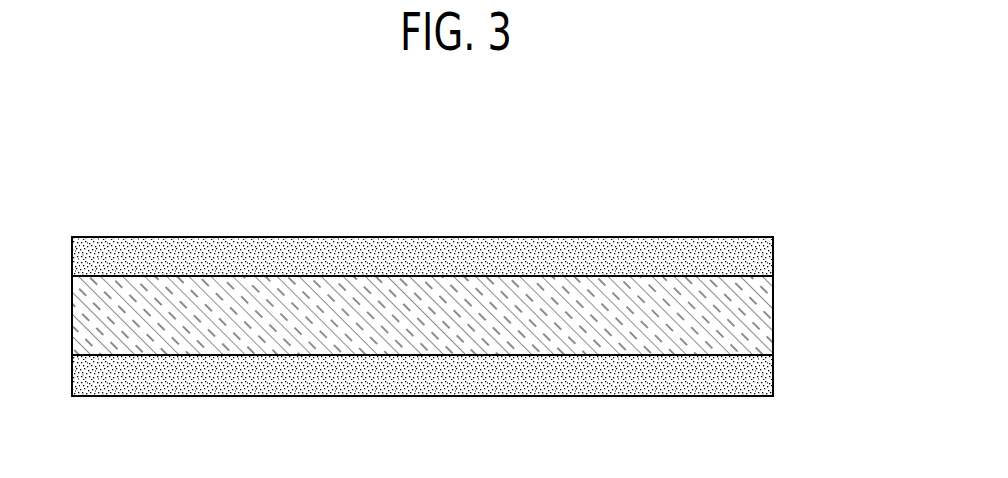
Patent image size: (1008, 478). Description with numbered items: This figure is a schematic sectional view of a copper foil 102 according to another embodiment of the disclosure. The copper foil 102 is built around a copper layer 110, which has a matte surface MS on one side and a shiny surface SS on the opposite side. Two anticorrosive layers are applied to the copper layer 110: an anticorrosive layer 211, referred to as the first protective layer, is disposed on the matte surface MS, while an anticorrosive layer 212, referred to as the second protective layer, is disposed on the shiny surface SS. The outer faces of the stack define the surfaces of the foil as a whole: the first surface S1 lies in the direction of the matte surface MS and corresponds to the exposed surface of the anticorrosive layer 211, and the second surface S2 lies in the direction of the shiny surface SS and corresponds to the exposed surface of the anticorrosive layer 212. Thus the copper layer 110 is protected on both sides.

The copper foil 102 is at (87, 149).
The anticorrosive layer 211 is at (760, 258).
The copper layer 110 is at (760, 315).
The anticorrosive layer 212 is at (760, 375).
The matte surface MS is at (295, 277).
The first surface S1 is at (450, 238).
The shiny surface SS is at (295, 355).
The second surface S2 is at (450, 396).